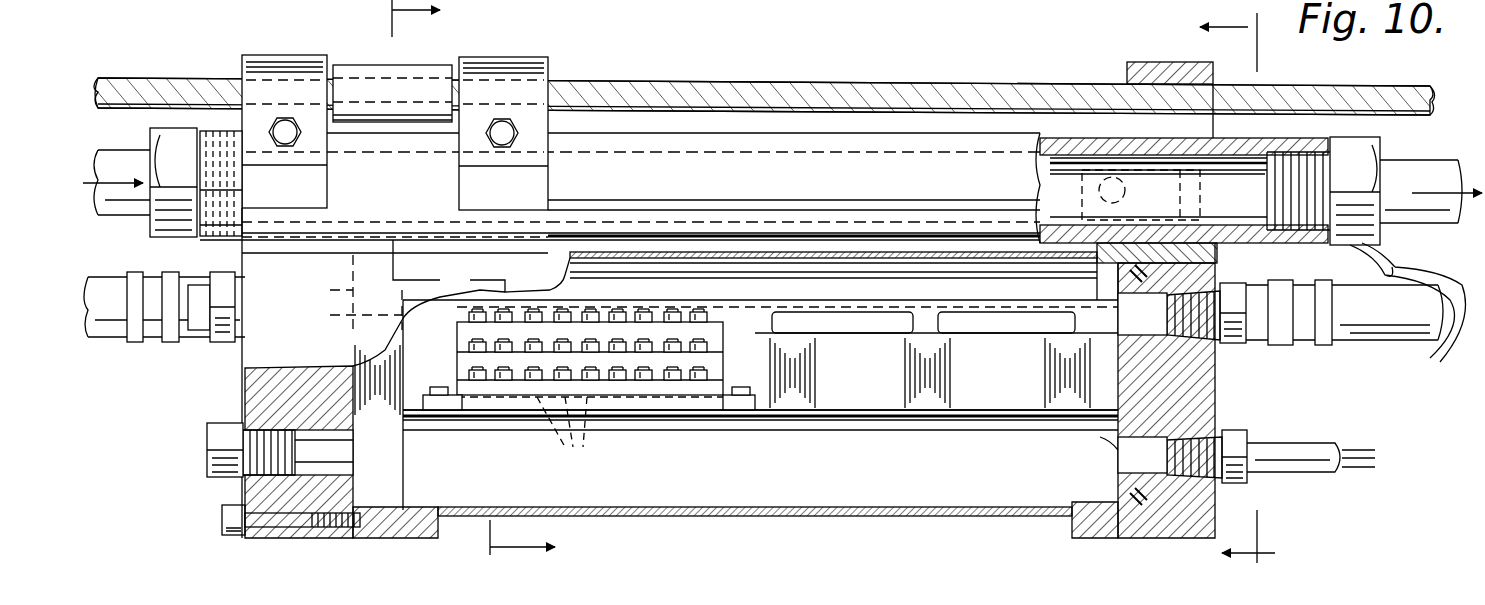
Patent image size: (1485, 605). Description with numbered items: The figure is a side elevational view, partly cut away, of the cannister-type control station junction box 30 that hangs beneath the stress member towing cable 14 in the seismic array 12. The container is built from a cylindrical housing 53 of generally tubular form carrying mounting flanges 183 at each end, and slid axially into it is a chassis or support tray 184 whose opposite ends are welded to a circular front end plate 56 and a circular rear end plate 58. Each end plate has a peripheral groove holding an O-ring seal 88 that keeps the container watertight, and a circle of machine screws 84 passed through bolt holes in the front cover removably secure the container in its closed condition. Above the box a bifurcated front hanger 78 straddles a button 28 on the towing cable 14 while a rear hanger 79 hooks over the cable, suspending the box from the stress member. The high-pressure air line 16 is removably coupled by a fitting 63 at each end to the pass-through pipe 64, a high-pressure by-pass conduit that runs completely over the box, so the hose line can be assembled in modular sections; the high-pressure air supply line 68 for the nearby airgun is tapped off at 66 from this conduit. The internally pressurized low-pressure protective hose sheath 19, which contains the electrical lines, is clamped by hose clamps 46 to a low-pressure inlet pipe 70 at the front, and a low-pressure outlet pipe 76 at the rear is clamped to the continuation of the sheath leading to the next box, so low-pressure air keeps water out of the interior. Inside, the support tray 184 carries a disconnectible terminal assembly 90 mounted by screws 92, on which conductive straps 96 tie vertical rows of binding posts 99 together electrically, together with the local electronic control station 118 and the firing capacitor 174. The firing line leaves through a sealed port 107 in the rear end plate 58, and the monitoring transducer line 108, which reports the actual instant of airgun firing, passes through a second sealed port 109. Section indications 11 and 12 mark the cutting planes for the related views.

The section line 11- 11 is at (491, 280).
The array 12 is at (1230, 284).
The stress member towing cable 14 is at (863, 80).
The high-pressure air line 16 is at (118, 157).
The low-pressure protective hose sheath 19 is at (110, 280).
The button 28 is at (394, 64).
The junction box 30 is at (967, 128).
The hose clamps 46 is at (137, 343).
The housing 53 is at (850, 250).
The front end plate 56 is at (253, 485).
The rear end plate 58 is at (1197, 377).
The fitting 63 is at (173, 233).
The pass-through pipe 64 is at (893, 140).
The tap 66 is at (1077, 193).
The high-pressure air supply line 68 is at (1392, 233).
The low-pressure inlet pipe 70 is at (200, 292).
The low-pressure outlet pipe 76 is at (1258, 292).
The front hanger 78 is at (285, 52).
The rear hanger 79 is at (1140, 62).
The machine screws 84 is at (293, 137).
The O-ring seal 88 is at (380, 480).
The terminal assembly 90 is at (760, 283).
The screws 92 is at (438, 386).
The conductive straps 96 is at (567, 436).
The binding posts 99 is at (680, 368).
The port 107 is at (1123, 297).
The monitoring transducer line 108 is at (1303, 428).
The port 109 is at (1130, 455).
The local electronic control station 118 is at (1000, 320).
The firing capacitor 174 is at (863, 323).
The mounting flanges 183 is at (407, 540).
The support tray 184 is at (840, 400).